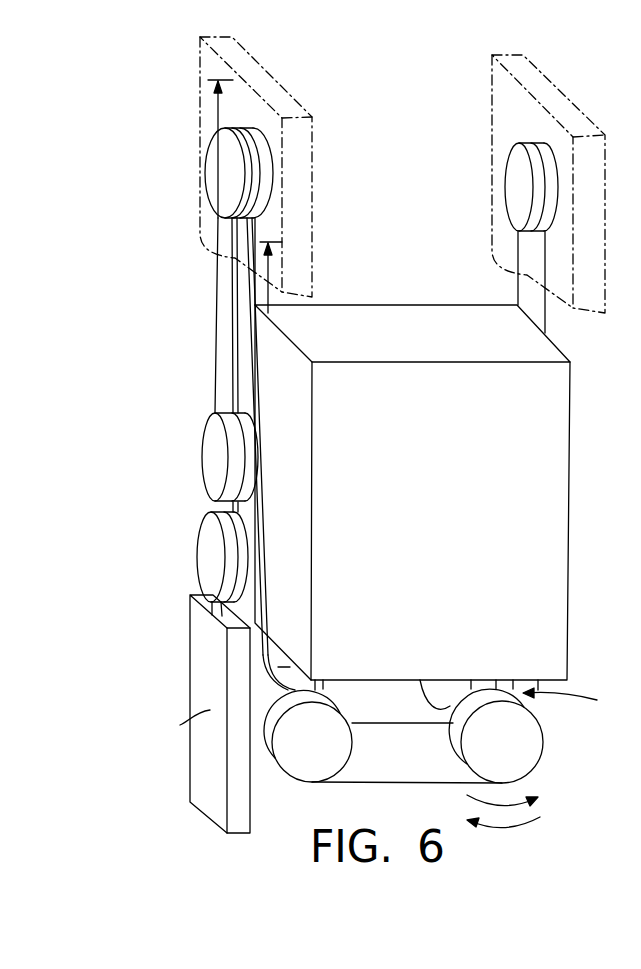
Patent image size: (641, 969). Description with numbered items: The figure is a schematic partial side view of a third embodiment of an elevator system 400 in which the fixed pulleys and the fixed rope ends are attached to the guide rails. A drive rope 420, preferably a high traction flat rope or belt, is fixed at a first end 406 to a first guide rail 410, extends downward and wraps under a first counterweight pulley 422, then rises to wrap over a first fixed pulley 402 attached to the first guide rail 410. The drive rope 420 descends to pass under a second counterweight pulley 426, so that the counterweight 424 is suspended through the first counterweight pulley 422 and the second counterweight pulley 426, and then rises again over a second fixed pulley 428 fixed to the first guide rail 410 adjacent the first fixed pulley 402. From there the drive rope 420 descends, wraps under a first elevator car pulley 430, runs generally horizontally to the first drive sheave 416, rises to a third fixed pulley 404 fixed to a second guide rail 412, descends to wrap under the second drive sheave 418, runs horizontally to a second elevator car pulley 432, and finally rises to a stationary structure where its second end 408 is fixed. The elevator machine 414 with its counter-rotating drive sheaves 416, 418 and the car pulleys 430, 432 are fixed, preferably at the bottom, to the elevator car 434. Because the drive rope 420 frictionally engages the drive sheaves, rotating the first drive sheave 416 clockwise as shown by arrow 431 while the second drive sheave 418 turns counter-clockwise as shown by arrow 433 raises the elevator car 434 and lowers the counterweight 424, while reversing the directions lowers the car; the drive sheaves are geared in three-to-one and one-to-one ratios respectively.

The elevator system 400 is at (441, 142).
The first fixed pulley 402 is at (210, 163).
The third fixed pulley 404 is at (518, 181).
The first end of the drive rope 406 is at (210, 92).
The second end of the drive rope 408 is at (276, 246).
The first guide rail 410 is at (286, 86).
The second guide rail 412 is at (576, 106).
The elevator machine 414 is at (582, 701).
The first drive sheave 416 is at (448, 688).
The second drive sheave 418 is at (507, 764).
The drive rope 420 is at (545, 312).
The first counterweight pulley 422 is at (214, 450).
The counterweight 424 is at (198, 642).
The second counterweight pulley 426 is at (213, 545).
The second fixed pulley 428 is at (232, 183).
The first elevator car pulley 430 is at (290, 667).
The arrow 431 is at (510, 828).
The second elevator car pulley 432 is at (307, 763).
The arrow 433 is at (502, 808).
The elevator car 434 is at (528, 472).